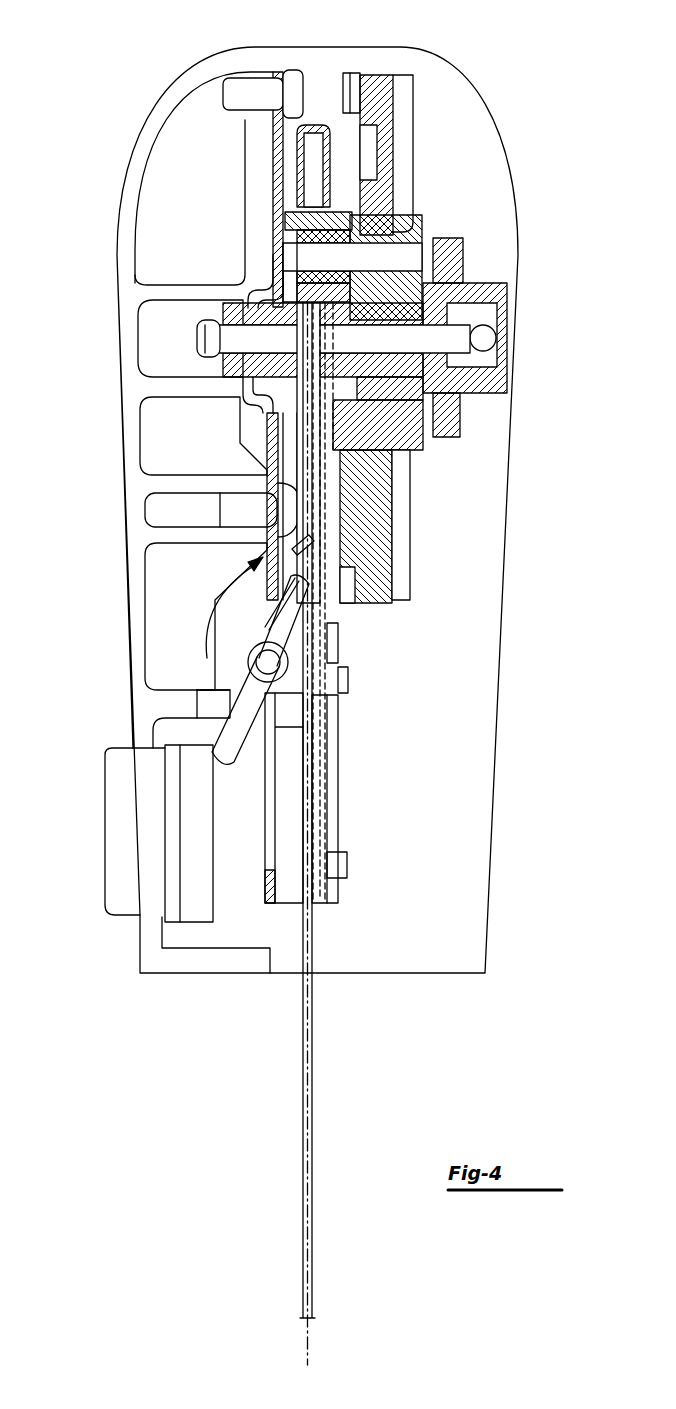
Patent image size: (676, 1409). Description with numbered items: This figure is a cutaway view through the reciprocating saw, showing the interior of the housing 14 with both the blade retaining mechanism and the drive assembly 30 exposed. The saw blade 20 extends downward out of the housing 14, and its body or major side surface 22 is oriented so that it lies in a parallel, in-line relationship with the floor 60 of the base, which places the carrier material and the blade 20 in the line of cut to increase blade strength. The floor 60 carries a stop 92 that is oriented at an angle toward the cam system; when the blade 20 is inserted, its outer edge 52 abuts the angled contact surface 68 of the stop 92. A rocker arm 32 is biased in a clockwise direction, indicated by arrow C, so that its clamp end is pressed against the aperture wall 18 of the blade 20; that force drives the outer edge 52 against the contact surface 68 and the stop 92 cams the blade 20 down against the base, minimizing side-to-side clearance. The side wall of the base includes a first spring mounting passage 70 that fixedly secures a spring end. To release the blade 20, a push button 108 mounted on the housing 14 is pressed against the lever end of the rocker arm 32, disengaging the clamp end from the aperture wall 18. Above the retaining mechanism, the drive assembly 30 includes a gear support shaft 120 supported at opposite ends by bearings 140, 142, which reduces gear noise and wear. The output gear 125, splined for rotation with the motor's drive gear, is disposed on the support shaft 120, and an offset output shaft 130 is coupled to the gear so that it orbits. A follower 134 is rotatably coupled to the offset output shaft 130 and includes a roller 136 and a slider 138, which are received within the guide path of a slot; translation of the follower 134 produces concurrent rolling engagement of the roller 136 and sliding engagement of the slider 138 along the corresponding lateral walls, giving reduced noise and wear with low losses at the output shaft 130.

The housing 14 is at (503, 158).
The aperture wall 18 is at (318, 628).
The saw blade 20 is at (294, 834).
The major side surface 22 is at (302, 1107).
The drive assembly 30 is at (433, 132).
The rocker arm 32 is at (237, 707).
The outer edge 52 is at (310, 545).
The floor 60 is at (313, 687).
The angled contact surface 68 is at (305, 553).
The first spring mounting passage 70 is at (302, 598).
The stop 92 is at (315, 535).
The push button 108 is at (120, 838).
The gear support shaft 120 is at (210, 340).
The output gear 125 is at (380, 88).
The offset output shaft 130 is at (300, 255).
The follower 134 is at (340, 197).
The roller 136 is at (283, 213).
The slider 138 is at (290, 232).
The bearing 140 is at (487, 292).
The bearing 142 is at (237, 387).
The clockwise direction arrow C is at (207, 656).